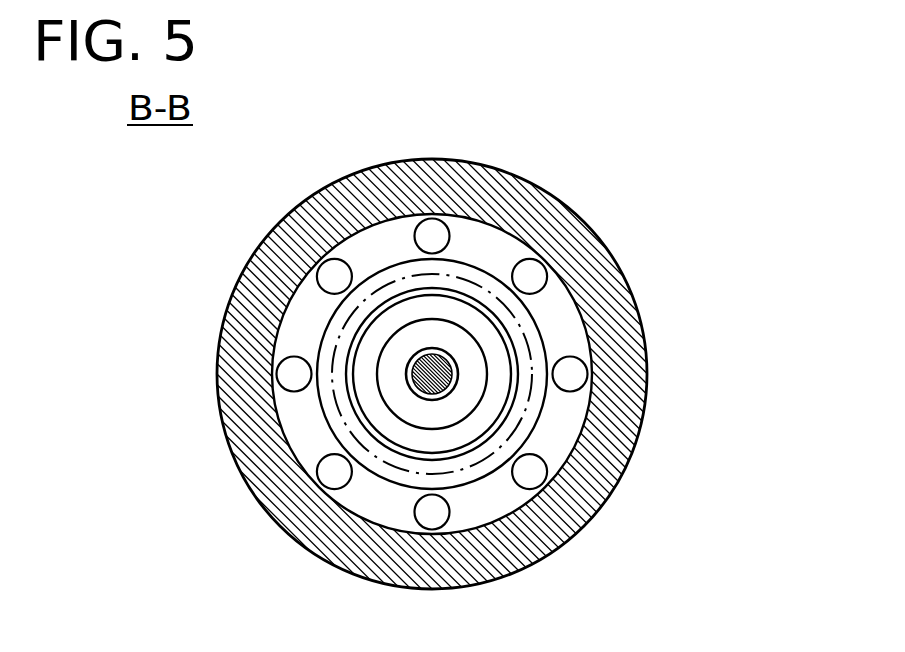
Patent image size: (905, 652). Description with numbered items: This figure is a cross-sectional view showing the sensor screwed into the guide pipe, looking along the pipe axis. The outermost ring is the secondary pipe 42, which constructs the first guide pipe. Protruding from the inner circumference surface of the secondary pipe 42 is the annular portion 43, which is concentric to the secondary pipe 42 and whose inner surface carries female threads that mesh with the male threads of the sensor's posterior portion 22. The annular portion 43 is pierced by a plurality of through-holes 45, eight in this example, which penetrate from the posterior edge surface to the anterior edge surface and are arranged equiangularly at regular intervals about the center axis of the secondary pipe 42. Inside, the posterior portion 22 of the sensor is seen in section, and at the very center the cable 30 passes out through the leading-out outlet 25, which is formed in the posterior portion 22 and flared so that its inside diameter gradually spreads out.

The posterior portion 22 is at (493, 347).
The leading-out outlet 25 is at (408, 414).
The cable 30 is at (427, 360).
The secondary pipe 42 is at (520, 196).
The annular portion 43 is at (563, 340).
The through-holes 45 is at (290, 357).